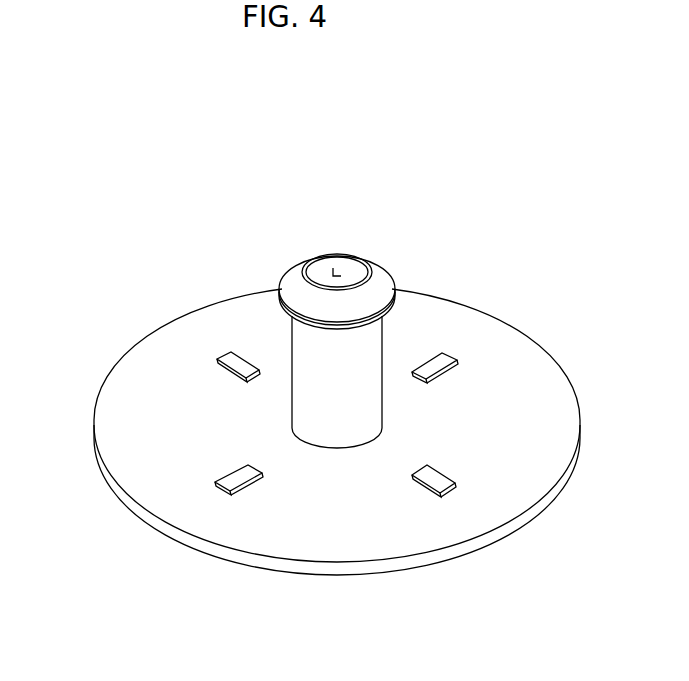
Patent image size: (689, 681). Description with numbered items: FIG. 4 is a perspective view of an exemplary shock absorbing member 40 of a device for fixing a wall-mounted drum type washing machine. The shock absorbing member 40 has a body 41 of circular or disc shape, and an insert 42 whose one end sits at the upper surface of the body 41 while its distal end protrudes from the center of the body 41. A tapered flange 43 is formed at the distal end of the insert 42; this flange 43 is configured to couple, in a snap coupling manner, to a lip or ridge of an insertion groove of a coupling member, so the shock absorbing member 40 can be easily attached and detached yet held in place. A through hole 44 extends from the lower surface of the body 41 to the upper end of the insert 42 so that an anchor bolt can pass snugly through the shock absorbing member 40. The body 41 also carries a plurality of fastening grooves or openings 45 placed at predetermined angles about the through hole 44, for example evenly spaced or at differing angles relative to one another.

The shock absorbing member 40 is at (122, 148).
The body 41 is at (343, 547).
The insert 42 is at (305, 365).
The flange 43 is at (380, 290).
The through hole 44 is at (336, 264).
The fastening grooves or openings 45 is at (228, 477).